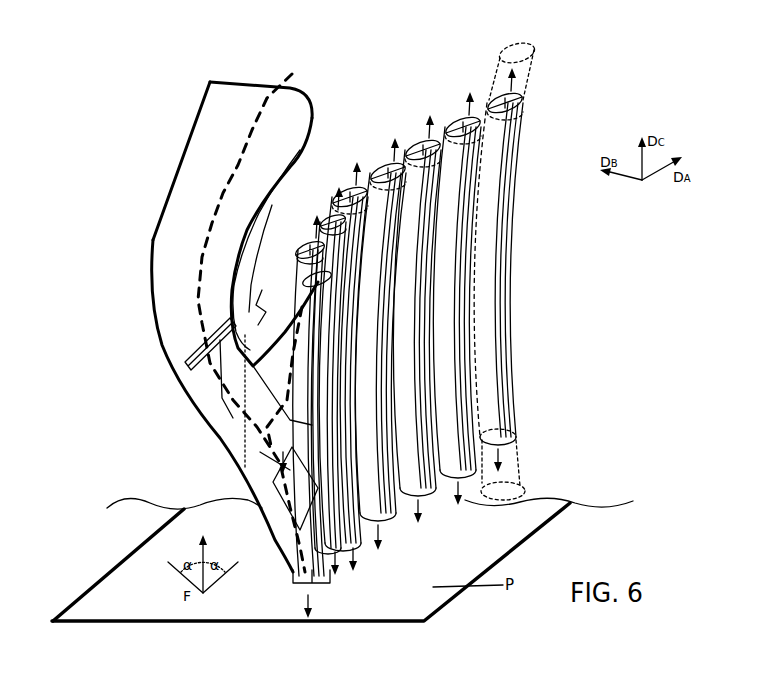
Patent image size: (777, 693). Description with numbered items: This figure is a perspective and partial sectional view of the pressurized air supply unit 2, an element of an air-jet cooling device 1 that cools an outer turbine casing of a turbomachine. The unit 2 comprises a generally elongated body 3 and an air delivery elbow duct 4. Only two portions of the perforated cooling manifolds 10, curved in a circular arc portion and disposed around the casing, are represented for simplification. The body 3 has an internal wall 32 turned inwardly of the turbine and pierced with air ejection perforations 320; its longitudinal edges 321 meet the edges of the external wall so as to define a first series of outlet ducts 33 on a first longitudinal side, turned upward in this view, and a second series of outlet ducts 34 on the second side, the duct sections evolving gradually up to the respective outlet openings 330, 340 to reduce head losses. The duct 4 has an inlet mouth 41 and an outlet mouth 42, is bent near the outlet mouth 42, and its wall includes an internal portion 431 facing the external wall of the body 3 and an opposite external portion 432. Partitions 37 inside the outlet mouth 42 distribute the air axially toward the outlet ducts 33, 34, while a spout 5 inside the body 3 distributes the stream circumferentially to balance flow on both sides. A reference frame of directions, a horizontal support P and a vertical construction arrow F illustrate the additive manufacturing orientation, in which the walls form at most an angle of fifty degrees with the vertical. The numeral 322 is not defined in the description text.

The air-jet cooling device 1 is at (603, 242).
The pressurized air supply unit 2 is at (342, 125).
The body 3 is at (522, 315).
The air delivery elbow duct 4 is at (197, 190).
The spout 5 is at (313, 421).
The perforated cooling manifold 10 is at (530, 80).
The internal wall 32 is at (452, 335).
The first series of outlet ducts 33 is at (448, 118).
The second series of outlet ducts 34 is at (515, 438).
The partition 37 is at (262, 387).
The inlet mouth 41 is at (236, 102).
The outlet mouth 42 is at (228, 423).
The air ejection perforations 320 is at (520, 137).
The longitudinal edges of the internal wall 321 is at (414, 189).
The outer wall 322 is at (518, 254).
The outlet openings of the first series of outlet ducts 330 is at (415, 144).
The outlet openings of the second series of outlet ducts 340 is at (520, 457).
The internal portion 431 is at (260, 232).
The external portion 432 is at (150, 259).